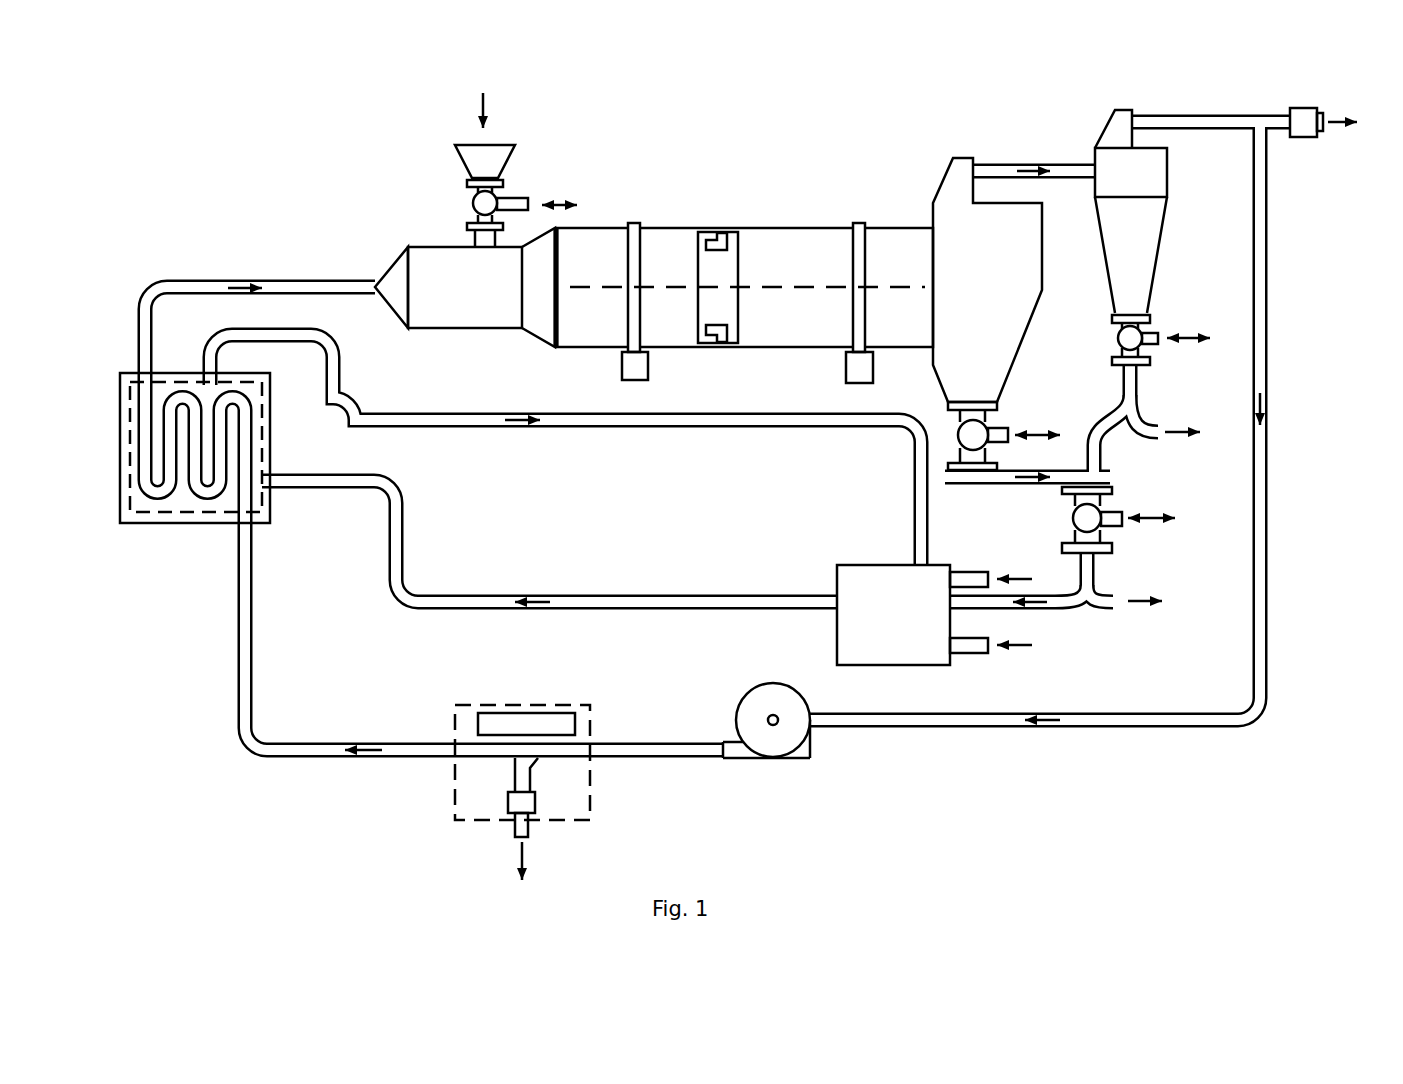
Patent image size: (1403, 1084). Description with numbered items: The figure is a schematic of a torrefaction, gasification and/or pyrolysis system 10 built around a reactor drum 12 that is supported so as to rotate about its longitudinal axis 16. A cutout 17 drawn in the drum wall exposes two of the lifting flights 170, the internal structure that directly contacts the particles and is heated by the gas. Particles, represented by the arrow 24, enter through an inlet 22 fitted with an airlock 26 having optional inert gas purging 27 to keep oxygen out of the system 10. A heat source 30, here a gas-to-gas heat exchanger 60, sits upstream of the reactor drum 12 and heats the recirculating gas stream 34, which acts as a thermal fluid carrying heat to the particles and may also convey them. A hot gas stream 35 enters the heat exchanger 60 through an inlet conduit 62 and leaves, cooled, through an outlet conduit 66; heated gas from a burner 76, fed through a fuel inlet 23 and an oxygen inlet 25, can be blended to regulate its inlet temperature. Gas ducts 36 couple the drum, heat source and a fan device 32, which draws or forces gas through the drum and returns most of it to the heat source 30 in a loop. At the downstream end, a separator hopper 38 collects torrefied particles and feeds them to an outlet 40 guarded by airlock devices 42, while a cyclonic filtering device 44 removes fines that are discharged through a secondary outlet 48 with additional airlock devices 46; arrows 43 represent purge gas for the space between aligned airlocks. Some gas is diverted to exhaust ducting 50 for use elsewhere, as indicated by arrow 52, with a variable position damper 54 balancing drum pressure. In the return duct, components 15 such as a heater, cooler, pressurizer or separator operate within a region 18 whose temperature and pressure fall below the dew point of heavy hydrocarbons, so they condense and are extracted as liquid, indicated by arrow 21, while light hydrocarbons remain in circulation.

The system 10 is at (755, 475).
The reactor drum 12 is at (690, 226).
The components 15 is at (514, 712).
The longitudinal axis 16 is at (588, 286).
The cutout 17 is at (742, 244).
The lifting flights 170 is at (728, 336).
The region 18 is at (562, 705).
The arrow 21 is at (526, 858).
The inlet 22 is at (462, 158).
The fuel inlet 23 is at (965, 655).
The arrow 24 is at (480, 105).
The oxygen inlet 25 is at (975, 571).
The airlock 26 is at (471, 200).
The gas purging 27 is at (556, 196).
The heat source 30 is at (237, 479).
The fan device 32 is at (804, 698).
The gas stream 34 is at (238, 283).
The hot gas stream 35 is at (520, 425).
The gas ducts 36 is at (1083, 163).
The separator hopper 38 is at (1008, 378).
The outlet 40 is at (1138, 600).
The airlock devices 42 is at (996, 406).
The arrows 43 is at (1187, 336).
The filtering device 44 is at (1155, 246).
The airlock devices 46 is at (1120, 334).
The secondary outlet 48 is at (1175, 425).
The exhaust ducting 50 is at (1287, 110).
The arrow 52 is at (1334, 133).
The variable position damper 54 is at (1300, 140).
The gas-to-gas heat exchanger 60 is at (272, 512).
The inlet conduit 62 is at (455, 592).
The outlet conduit 66 is at (620, 428).
The burner 76 is at (880, 565).